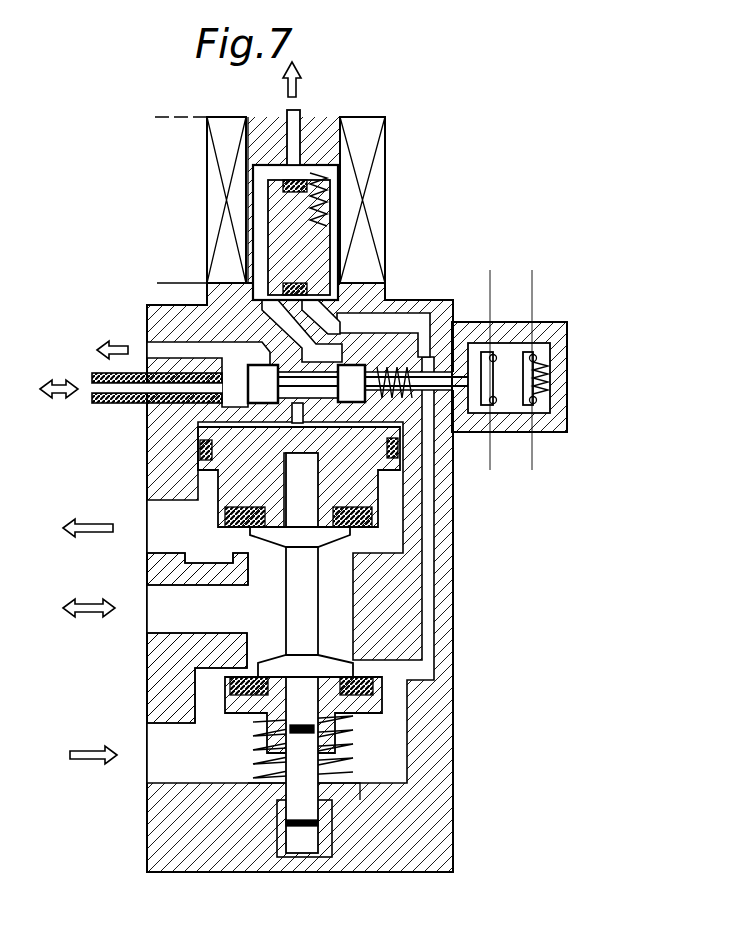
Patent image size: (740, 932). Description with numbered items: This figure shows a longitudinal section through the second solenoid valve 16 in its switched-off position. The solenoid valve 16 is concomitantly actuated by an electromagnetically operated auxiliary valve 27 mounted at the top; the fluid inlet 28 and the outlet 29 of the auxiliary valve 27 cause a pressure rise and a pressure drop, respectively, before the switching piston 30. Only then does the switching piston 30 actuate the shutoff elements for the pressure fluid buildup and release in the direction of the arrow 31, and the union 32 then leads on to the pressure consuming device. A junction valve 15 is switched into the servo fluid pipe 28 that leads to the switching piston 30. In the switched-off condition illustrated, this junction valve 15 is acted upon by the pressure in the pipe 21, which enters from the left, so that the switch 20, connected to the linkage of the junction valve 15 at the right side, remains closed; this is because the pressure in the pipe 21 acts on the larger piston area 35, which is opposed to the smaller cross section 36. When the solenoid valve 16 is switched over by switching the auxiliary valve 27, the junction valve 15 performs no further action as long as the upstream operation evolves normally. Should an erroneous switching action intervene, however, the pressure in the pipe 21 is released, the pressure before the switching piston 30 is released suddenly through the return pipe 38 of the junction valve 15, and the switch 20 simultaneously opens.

The junction valve 15 is at (353, 390).
The solenoid valve 16 is at (440, 688).
The switch 20 is at (538, 325).
The pipe 21 is at (92, 375).
The auxiliary valve 27 is at (320, 245).
The fluid inlet 28 is at (262, 310).
The outlet 29 is at (300, 115).
The switching piston 30 is at (200, 425).
The arrow 31 is at (93, 597).
The union 32 is at (153, 603).
The larger piston area 35 is at (240, 372).
The smaller cross section 36 is at (415, 320).
The return pipe 38 is at (160, 348).